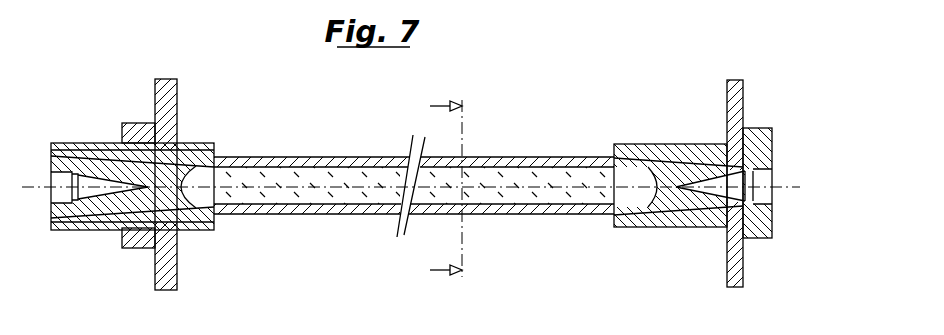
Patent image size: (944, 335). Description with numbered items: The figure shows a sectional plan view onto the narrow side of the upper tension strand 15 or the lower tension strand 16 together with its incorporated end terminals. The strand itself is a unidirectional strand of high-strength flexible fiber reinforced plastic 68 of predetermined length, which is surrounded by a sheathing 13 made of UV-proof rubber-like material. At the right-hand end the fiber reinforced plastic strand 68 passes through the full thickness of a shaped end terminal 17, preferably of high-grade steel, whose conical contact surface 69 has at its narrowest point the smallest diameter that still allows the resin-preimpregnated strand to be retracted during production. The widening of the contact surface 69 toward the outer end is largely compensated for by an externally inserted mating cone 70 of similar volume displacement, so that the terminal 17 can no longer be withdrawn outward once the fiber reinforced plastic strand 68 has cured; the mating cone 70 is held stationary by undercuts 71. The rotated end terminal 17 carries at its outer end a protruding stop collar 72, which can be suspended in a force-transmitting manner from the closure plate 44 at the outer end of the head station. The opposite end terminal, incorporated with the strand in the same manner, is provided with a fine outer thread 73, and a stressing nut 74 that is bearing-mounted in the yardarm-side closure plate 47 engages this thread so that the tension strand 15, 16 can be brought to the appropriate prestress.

The sheathing 13 is at (363, 212).
The upper tension strand 15 is at (421, 169).
The lower tension strand 16 is at (421, 169).
The end terminal 17 is at (680, 222).
The closure plate 44 is at (737, 115).
The yardarm-side closure plate 47 is at (172, 105).
The fiber reinforced plastic strand 68 is at (546, 196).
The conical contact surface 69 is at (193, 205).
The mating cone 70 is at (97, 195).
The undercuts 71 is at (76, 196).
The stop collar 72 is at (760, 127).
The fine outer thread 73 is at (215, 143).
The stressing nut 74 is at (127, 122).